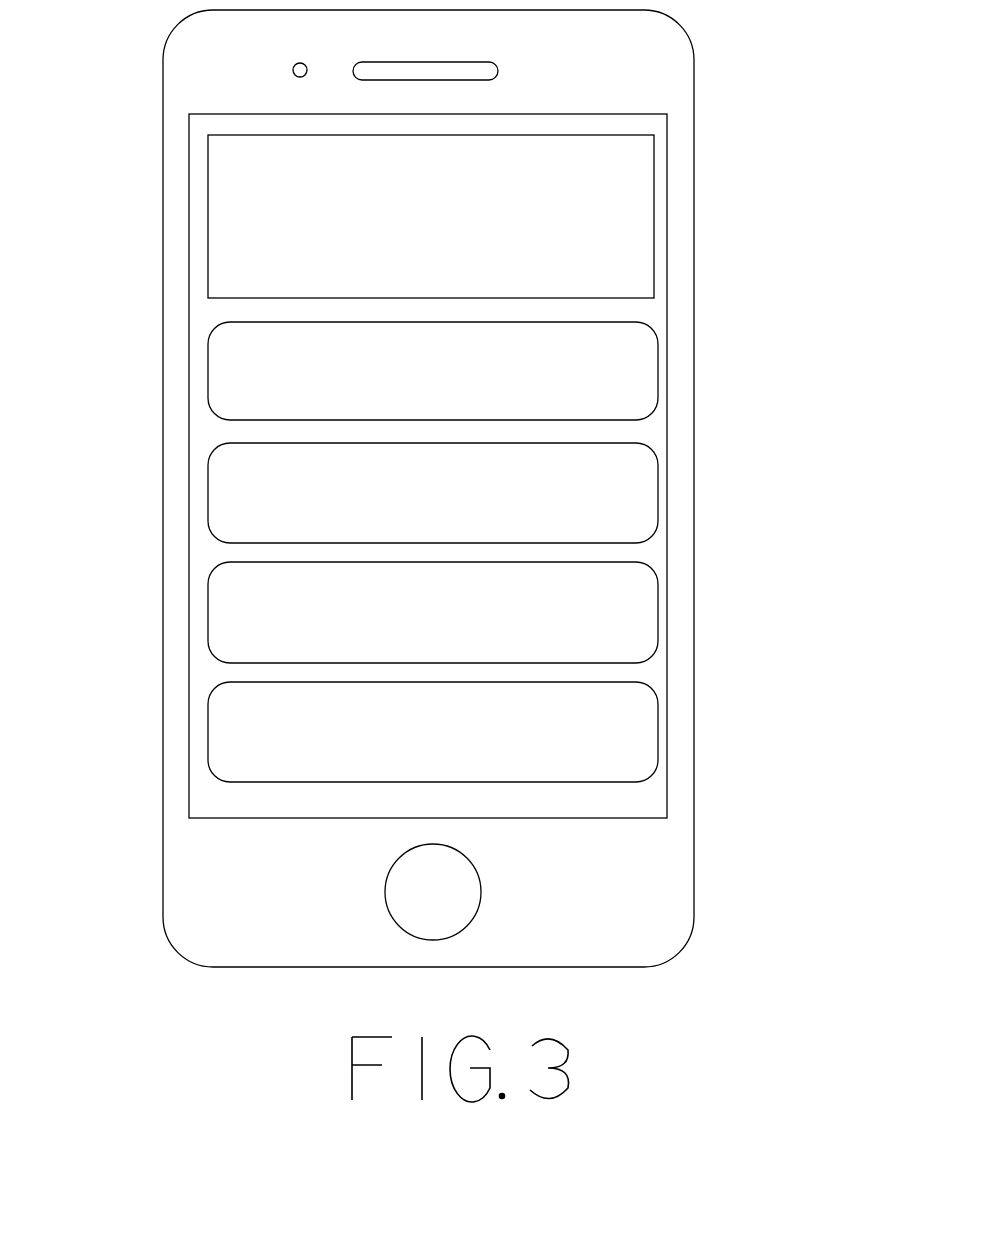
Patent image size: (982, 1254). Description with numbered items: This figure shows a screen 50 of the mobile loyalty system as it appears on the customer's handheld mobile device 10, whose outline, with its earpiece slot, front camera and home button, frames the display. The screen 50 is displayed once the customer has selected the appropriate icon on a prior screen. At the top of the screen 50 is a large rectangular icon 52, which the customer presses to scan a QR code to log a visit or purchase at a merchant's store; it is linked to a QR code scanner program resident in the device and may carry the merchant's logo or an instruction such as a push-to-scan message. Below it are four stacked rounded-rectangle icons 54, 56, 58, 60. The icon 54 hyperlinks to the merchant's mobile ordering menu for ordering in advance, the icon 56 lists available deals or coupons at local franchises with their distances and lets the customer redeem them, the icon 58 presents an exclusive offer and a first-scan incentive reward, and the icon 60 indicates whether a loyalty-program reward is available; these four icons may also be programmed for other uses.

The mobile device 10 is at (768, 287).
The screen 50 is at (208, 437).
The icon 52 is at (230, 222).
The icon 54 is at (222, 368).
The icon 56 is at (220, 503).
The icon 58 is at (230, 620).
The icon 60 is at (227, 733).